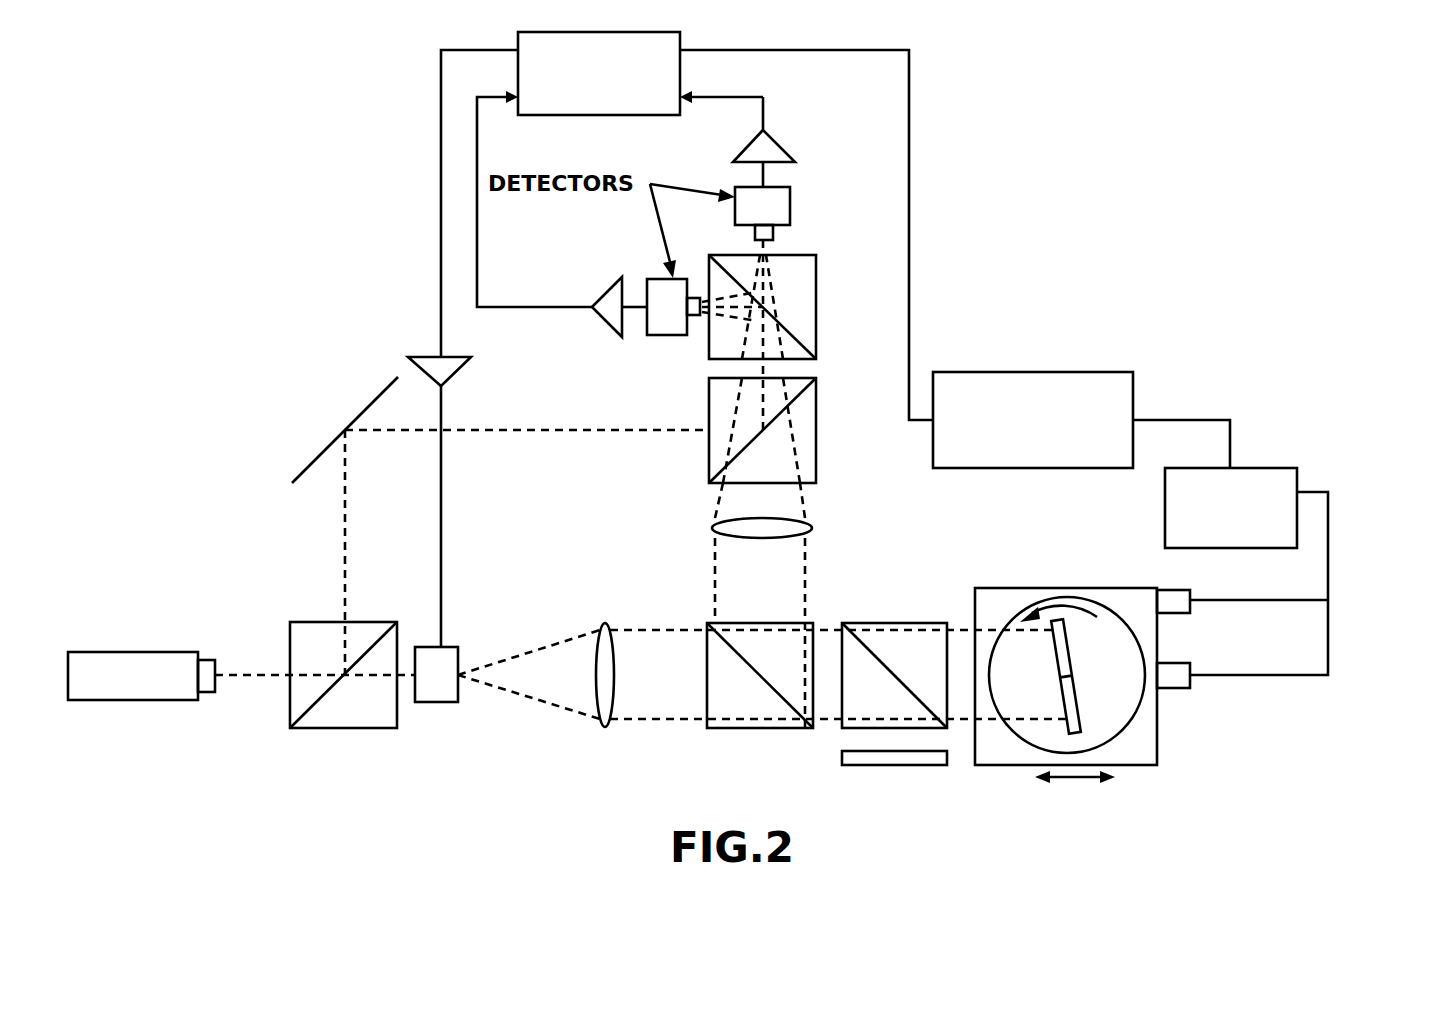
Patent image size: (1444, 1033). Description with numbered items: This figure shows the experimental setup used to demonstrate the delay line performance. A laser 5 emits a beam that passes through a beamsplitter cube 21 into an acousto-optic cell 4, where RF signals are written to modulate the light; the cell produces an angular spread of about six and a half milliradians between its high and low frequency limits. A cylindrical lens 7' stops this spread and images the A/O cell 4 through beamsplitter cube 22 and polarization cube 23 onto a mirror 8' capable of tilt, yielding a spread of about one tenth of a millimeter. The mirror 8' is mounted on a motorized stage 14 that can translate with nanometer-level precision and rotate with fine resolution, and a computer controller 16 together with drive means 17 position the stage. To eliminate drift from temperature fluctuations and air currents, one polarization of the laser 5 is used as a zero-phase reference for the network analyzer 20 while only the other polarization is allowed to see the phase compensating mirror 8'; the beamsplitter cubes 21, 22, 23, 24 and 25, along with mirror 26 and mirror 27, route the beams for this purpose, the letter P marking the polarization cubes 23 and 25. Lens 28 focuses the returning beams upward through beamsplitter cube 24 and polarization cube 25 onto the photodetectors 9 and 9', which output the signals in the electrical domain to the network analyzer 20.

The network analyzer 20 is at (577, 32).
The photodetector 9' is at (793, 211).
The photodetector 9 is at (646, 284).
The polarization beamsplitter cube 25 is at (816, 300).
The beamsplitter cube 24 is at (816, 445).
The lens 28 is at (712, 528).
The beamsplitter cube 22 is at (718, 728).
The polarization beamsplitter cube 23 is at (870, 623).
The beamsplitter cube 21 is at (318, 728).
The laser 5 is at (120, 700).
The acousto-optic cell 4 is at (430, 702).
The cylindrical lens 7' is at (638, 699).
The mirror 27 is at (305, 470).
The mirror 26 is at (848, 768).
The computer controller 16 is at (1033, 420).
The drive means 17 is at (1362, 563).
The motorized stage 14 is at (995, 765).
The phase compensating mirror 8' is at (1129, 685).